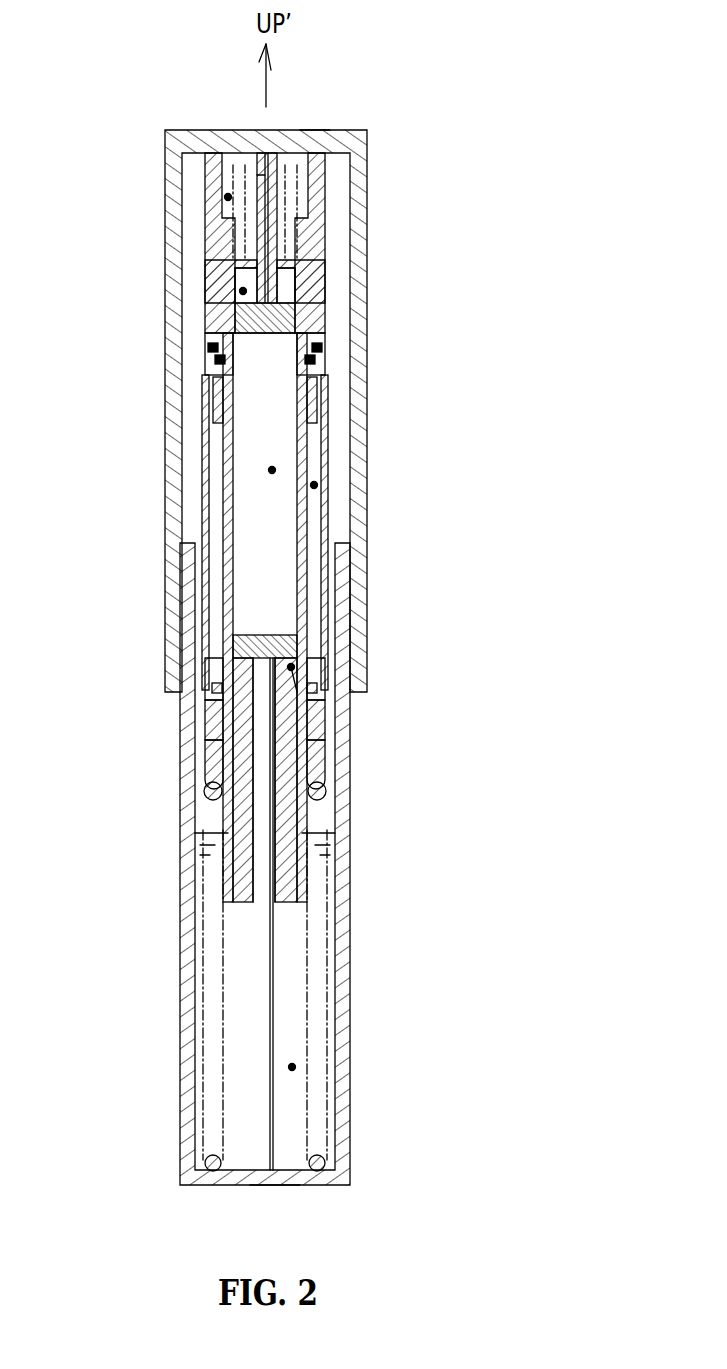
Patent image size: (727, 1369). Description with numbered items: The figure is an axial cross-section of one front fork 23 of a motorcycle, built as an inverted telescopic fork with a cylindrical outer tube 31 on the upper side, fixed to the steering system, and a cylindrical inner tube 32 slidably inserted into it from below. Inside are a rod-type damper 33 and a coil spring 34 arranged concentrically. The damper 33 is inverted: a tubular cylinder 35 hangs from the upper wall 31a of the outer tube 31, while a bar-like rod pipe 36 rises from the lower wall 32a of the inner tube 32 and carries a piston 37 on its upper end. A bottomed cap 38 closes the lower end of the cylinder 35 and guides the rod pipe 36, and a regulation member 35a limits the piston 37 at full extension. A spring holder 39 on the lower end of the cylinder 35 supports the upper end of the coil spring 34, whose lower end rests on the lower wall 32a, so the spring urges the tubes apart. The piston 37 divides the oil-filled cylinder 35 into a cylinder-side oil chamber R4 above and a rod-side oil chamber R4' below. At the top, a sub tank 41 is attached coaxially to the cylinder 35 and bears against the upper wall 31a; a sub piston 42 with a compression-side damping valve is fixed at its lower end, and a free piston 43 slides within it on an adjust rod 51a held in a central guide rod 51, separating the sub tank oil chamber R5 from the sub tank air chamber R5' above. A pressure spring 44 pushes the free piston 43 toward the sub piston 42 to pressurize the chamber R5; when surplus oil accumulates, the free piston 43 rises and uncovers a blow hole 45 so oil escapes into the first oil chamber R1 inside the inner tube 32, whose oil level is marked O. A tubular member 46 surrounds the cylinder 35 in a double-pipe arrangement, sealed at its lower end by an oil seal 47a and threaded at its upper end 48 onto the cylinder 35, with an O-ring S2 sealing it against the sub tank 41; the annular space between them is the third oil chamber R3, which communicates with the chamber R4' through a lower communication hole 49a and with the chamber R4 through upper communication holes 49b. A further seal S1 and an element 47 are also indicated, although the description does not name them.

The front fork 23 is at (487, 140).
The outer tube 31 is at (368, 370).
The upper wall of the outer tube 31a is at (312, 130).
The inner tube 32 is at (352, 977).
The lower wall of the inner tube 32a is at (289, 1186).
The rod-type damper 33 is at (312, 562).
The coil spring 34 is at (327, 795).
The cylinder 35 is at (324, 530).
The regulation member 35a is at (225, 768).
The rod pipe 36 is at (240, 818).
The piston 37 is at (290, 646).
The cap 38 is at (305, 880).
The spring holder 39 is at (215, 735).
The sub tank 41 is at (330, 290).
The sub piston 42 is at (297, 318).
The free piston 43 is at (327, 242).
The pressure spring 44 is at (307, 173).
The blow hole 45 is at (222, 218).
The tubular member 46 is at (334, 415).
The passage 47 is at (297, 690).
The oil seal 47a is at (318, 688).
The upper end of the tubular member 48 is at (328, 362).
The communication hole 49a is at (233, 675).
The communication holes 49b is at (225, 462).
The guide rod 51 is at (255, 168).
The adjust rod 51a is at (262, 182).
The oil level O is at (325, 812).
The first oil chamber R1 is at (295, 1067).
The third oil chamber R3 is at (317, 485).
The cylinder-side oil chamber R4 is at (360, 484).
The rod-side oil chamber R4' is at (373, 697).
The sub tank oil chamber R5 is at (197, 301).
The sub tank air chamber R5' is at (146, 212).
The first seal S1 is at (207, 348).
The O-ring S2 is at (218, 361).